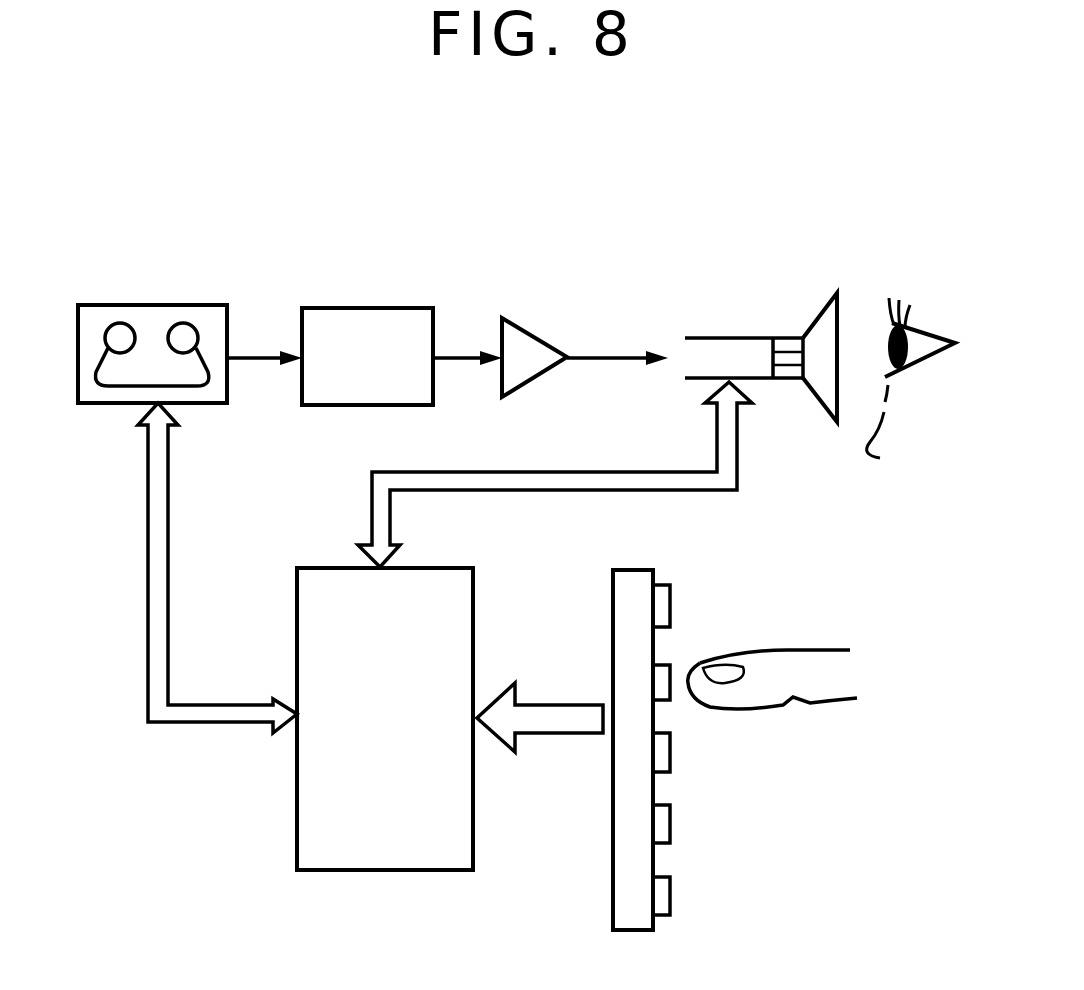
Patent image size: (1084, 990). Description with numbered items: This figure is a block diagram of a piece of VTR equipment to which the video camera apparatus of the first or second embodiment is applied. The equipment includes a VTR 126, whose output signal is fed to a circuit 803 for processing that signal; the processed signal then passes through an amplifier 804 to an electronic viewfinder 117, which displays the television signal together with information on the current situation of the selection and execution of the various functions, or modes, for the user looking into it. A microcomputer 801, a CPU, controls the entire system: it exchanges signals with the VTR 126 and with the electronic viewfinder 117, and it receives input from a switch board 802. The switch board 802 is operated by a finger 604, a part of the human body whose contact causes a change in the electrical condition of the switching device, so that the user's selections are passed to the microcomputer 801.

The VTR 126 is at (160, 305).
The circuit 803 is at (372, 305).
The amplifier 804 is at (538, 333).
The electronic viewfinder 117 is at (726, 337).
The microcomputer 801 is at (370, 873).
The switch board 802 is at (677, 610).
The finger 604 is at (820, 707).